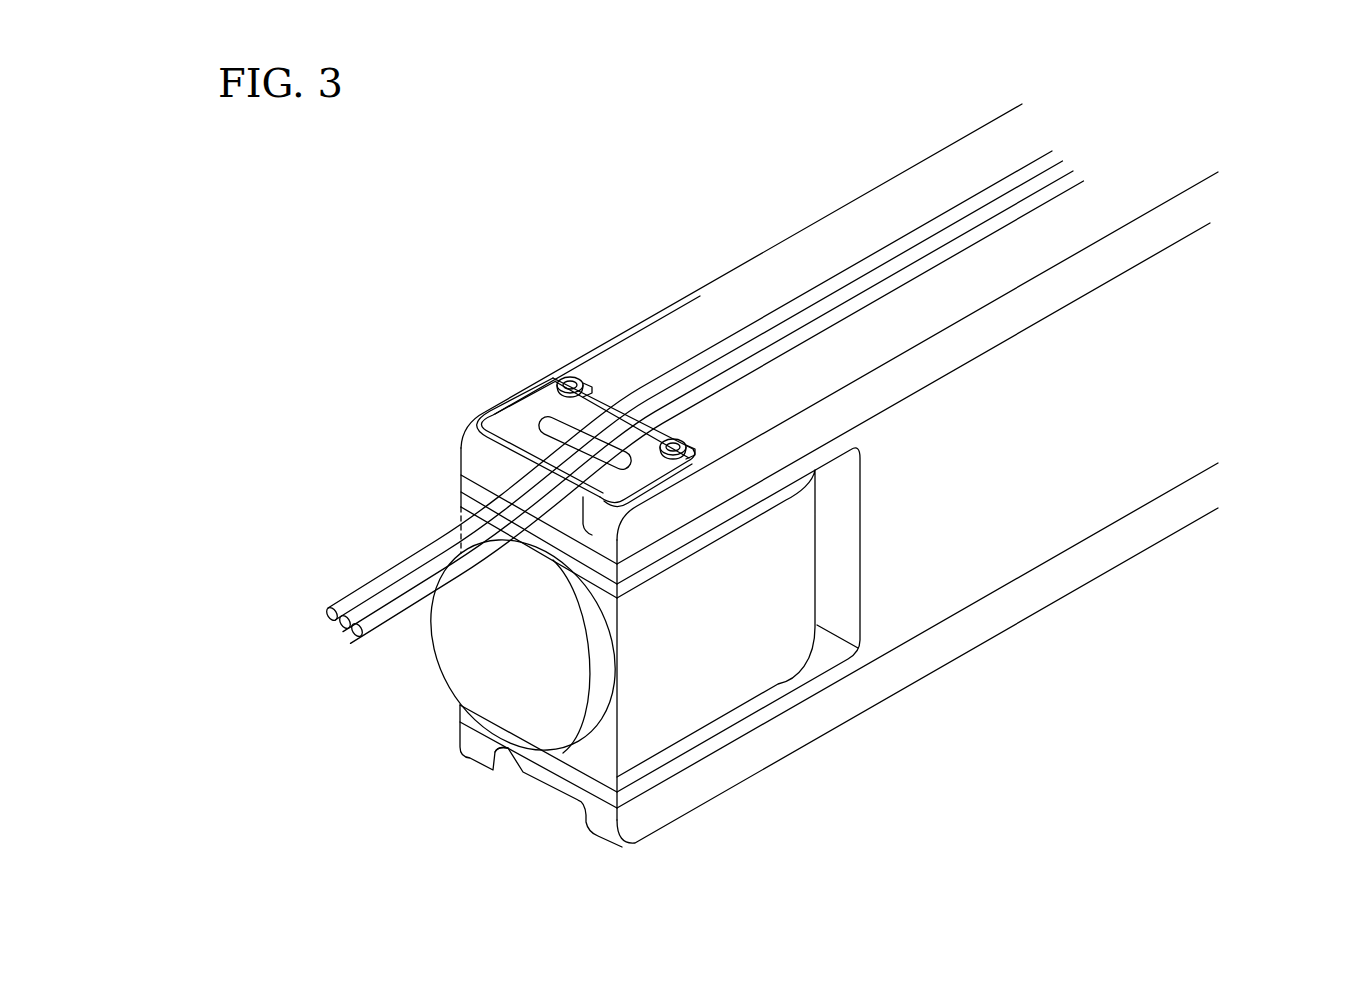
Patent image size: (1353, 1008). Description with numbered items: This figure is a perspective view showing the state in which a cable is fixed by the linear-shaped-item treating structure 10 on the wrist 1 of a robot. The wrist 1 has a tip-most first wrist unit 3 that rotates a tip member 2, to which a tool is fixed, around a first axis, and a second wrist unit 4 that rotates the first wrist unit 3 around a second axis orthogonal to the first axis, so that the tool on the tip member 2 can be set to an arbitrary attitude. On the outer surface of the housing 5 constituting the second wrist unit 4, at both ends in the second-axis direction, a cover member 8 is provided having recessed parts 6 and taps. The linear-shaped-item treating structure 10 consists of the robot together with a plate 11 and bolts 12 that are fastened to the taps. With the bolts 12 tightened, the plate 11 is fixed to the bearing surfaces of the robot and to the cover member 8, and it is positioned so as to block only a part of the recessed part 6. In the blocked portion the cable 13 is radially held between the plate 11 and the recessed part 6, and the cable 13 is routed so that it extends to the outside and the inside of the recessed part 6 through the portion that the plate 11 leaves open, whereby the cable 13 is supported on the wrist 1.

The wrist 1 is at (396, 264).
The tip member 2 is at (453, 647).
The first wrist unit 3 is at (679, 709).
The second wrist unit 4 is at (838, 239).
The housing 5 is at (1013, 551).
The recessed part 6 is at (574, 518).
The cover member 8 is at (937, 172).
The linear-shaped-item treating structure 10 is at (498, 368).
The plate 11 is at (507, 423).
The bolt 12 is at (570, 378).
The cable 13 is at (372, 590).